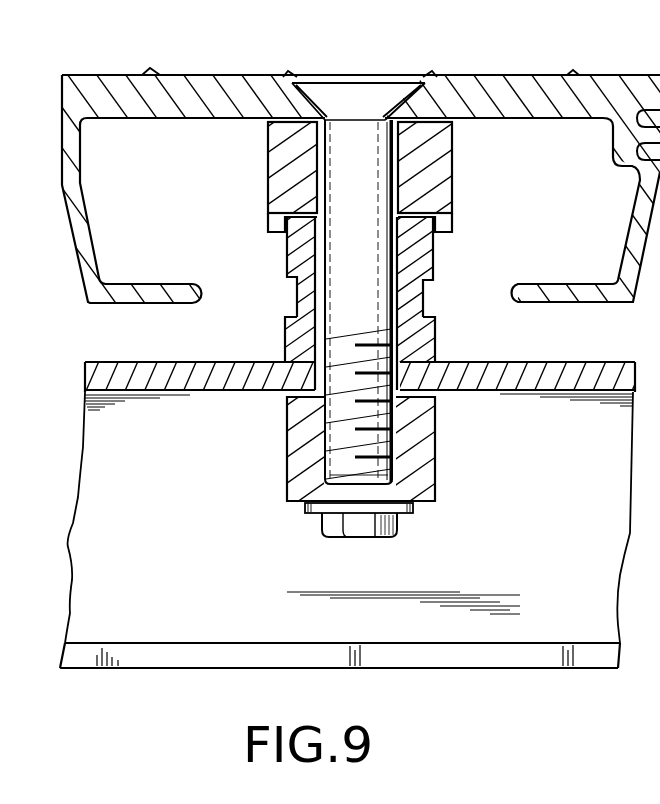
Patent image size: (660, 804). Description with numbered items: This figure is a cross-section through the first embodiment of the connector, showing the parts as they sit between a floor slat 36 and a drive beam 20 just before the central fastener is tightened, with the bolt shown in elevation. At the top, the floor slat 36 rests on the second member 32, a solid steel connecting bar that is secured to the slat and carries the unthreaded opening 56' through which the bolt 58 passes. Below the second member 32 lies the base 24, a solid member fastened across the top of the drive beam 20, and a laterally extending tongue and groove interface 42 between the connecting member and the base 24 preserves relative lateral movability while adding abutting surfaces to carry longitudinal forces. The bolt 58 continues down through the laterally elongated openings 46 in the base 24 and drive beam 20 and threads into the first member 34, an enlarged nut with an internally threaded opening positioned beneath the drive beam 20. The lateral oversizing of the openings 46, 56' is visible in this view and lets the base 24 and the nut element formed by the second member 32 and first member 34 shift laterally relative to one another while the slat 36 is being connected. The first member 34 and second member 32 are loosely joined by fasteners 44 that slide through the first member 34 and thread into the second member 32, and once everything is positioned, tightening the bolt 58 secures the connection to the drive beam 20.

The floor slat 36 is at (593, 87).
The second member 32 is at (278, 167).
The unthreaded opening 56' is at (385, 340).
The tongue and groove interface 42 is at (256, 228).
The bolt 58 is at (380, 268).
The laterally elongated openings 46 is at (318, 295).
The base 24 is at (423, 343).
The drive beam 20 is at (170, 380).
The first member 34 is at (425, 484).
The fasteners 44 is at (353, 538).